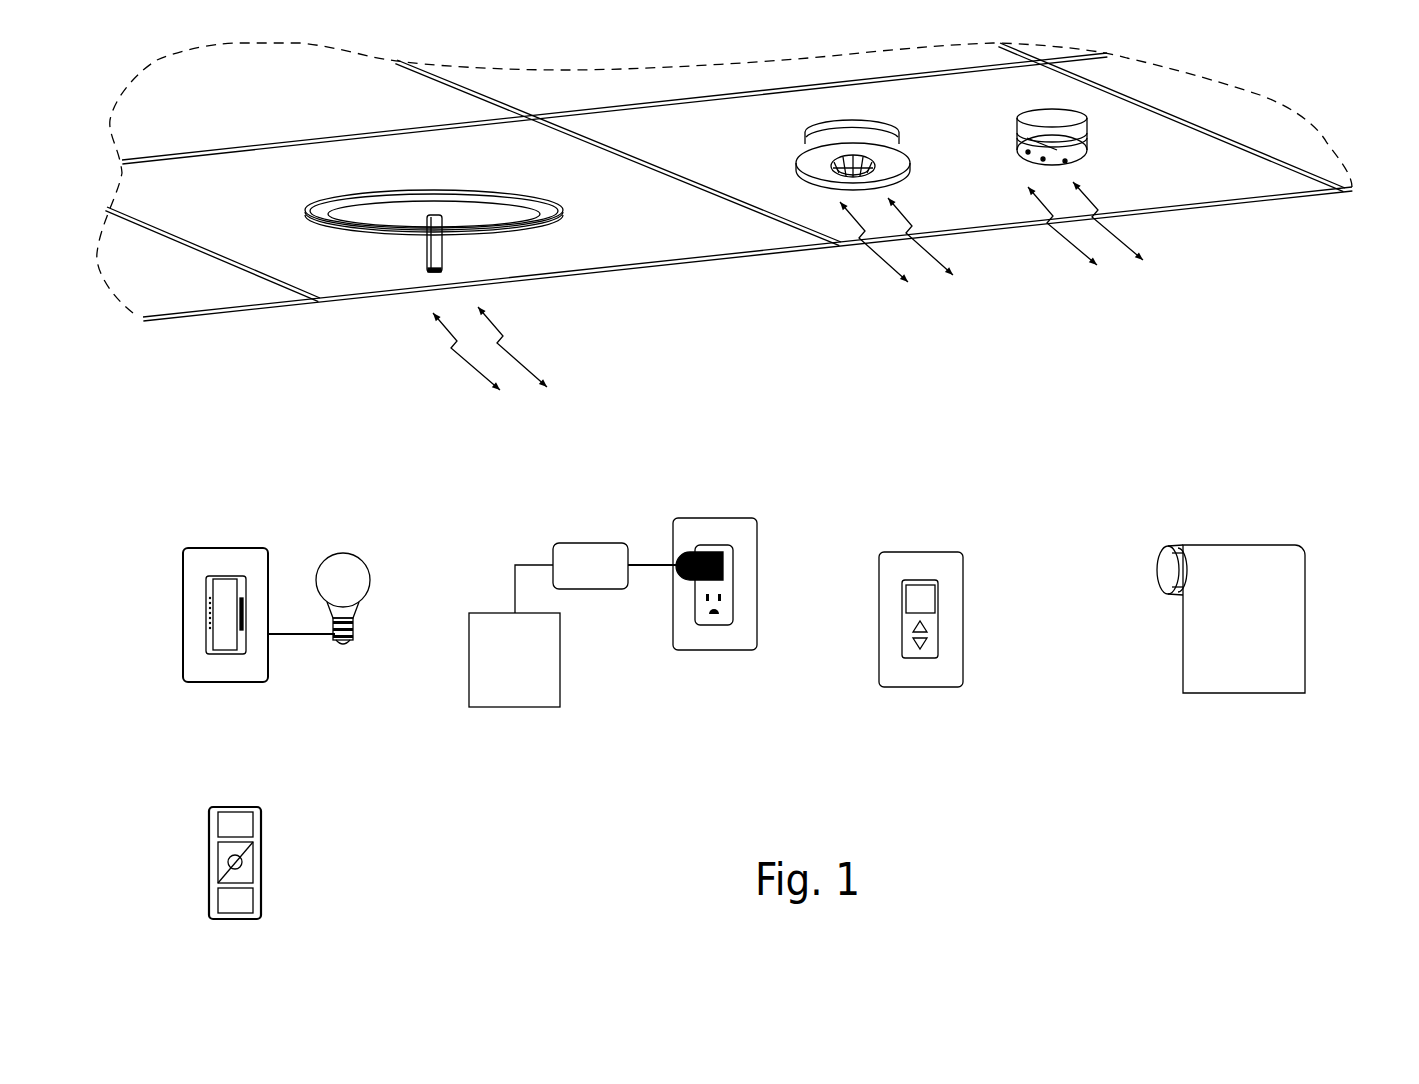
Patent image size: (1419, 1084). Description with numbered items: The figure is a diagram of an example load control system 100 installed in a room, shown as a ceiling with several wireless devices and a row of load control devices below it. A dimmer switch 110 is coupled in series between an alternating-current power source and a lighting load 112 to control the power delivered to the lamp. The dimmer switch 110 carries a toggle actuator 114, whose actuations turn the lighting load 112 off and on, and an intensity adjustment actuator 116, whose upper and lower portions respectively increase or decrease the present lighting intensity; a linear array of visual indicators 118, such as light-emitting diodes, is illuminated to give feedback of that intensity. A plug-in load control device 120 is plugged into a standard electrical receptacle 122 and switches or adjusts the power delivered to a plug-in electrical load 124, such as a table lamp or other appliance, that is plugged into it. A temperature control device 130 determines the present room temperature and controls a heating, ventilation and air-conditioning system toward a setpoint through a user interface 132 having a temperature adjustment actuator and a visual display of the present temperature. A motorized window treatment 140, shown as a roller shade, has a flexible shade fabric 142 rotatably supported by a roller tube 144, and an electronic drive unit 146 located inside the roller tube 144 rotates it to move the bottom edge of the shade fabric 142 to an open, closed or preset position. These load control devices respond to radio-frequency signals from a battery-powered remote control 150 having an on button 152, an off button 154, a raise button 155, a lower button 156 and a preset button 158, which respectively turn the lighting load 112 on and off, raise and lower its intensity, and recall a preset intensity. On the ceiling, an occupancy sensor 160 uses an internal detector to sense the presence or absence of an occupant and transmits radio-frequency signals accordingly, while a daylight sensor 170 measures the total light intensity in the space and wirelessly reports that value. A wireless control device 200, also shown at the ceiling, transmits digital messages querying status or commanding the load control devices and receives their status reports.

The load control system 100 is at (1300, 355).
The dimmer switch 110 is at (253, 665).
The lighting load 112 is at (352, 580).
The toggle actuator 114 is at (224, 637).
The intensity adjustment actuator 116 is at (251, 609).
The visual indicators 118 is at (197, 608).
The plug-in load control device 120 is at (605, 580).
The electrical receptacle 122 is at (733, 643).
The plug-in electrical load 124 is at (552, 688).
The temperature control device 130 is at (890, 593).
The user interface 132 is at (932, 630).
The motorized window treatment 140 is at (1187, 573).
The shade fabric 142 is at (1244, 619).
The roller tube 144 is at (1175, 593).
The electronic drive unit 146 is at (1158, 572).
The remote control 150 is at (243, 805).
The on button 152 is at (243, 823).
The off button 154 is at (240, 903).
The raise button 155 is at (229, 847).
The lower button 156 is at (243, 875).
The preset button 158 is at (230, 865).
The occupancy sensor 160 is at (893, 172).
The daylight sensor 170 is at (1040, 149).
The wireless control device 200 is at (508, 248).